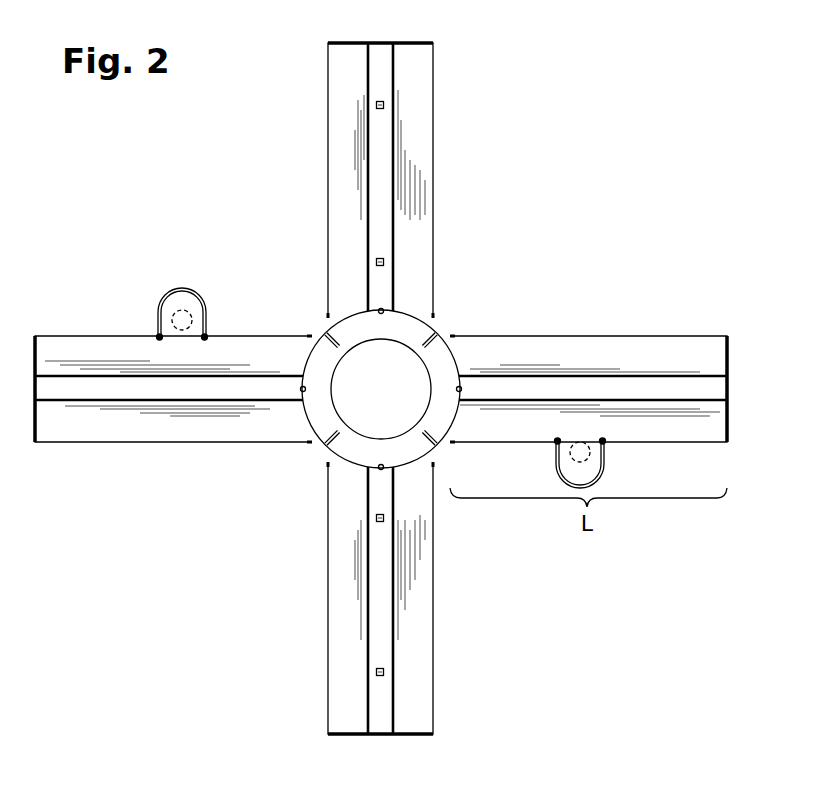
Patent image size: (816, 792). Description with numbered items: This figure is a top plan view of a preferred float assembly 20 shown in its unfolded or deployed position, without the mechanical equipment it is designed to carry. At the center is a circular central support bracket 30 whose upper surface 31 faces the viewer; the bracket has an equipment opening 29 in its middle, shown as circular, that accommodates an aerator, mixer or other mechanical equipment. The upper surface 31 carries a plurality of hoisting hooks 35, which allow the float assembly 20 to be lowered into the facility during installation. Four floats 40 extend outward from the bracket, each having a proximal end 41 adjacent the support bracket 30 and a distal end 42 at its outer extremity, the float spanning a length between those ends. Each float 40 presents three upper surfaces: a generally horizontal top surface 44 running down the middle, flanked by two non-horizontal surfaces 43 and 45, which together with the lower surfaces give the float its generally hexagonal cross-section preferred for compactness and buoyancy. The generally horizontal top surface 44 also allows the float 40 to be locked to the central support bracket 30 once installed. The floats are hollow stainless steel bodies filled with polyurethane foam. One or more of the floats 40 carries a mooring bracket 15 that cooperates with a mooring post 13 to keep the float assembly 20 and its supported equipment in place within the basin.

The mooring post 13 is at (205, 308).
The mooring bracket 15 is at (183, 289).
The float assembly 20 is at (467, 70).
The equipment opening 29 is at (362, 412).
The central support bracket 30 is at (432, 326).
The upper surface 31 is at (446, 334).
The hoisting hooks 35 is at (322, 336).
The float 40 is at (428, 180).
The proximal end 41 is at (326, 328).
The distal end 42 is at (437, 43).
The non-horizontal upper surface 43 is at (336, 162).
The generally horizontal top surface 44 is at (382, 150).
The non-horizontal upper surface 45 is at (418, 266).